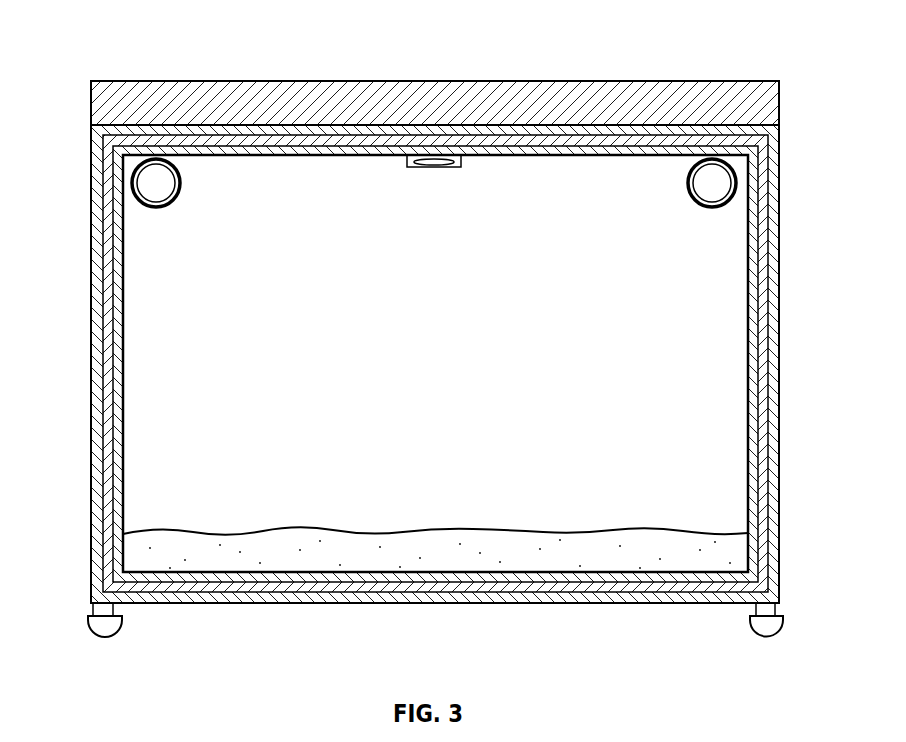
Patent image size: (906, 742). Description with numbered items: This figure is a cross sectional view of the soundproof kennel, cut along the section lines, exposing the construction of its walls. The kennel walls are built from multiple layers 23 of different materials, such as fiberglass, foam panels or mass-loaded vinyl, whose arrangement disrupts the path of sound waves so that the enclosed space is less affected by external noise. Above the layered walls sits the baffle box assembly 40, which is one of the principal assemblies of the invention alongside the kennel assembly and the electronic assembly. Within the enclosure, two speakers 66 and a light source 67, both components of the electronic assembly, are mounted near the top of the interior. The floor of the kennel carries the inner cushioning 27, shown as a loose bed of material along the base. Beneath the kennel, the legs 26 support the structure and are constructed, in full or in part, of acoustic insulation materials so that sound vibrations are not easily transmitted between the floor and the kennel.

The baffle box assembly 40 is at (108, 80).
The layers 23 is at (107, 415).
The light source 67 is at (435, 163).
The speakers 66 is at (165, 188).
The inner cushioning 27 is at (715, 528).
The legs 26 is at (104, 637).